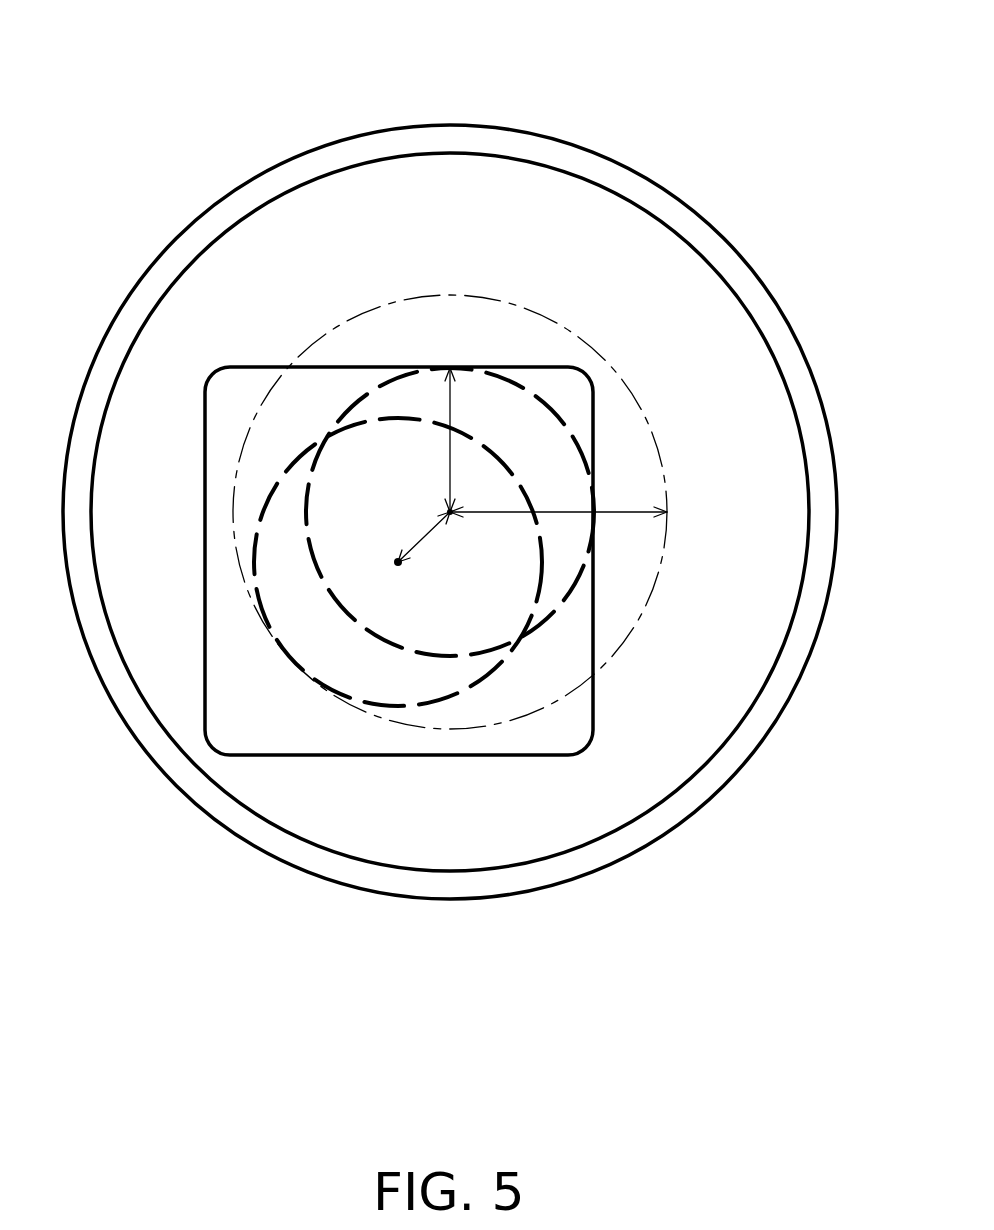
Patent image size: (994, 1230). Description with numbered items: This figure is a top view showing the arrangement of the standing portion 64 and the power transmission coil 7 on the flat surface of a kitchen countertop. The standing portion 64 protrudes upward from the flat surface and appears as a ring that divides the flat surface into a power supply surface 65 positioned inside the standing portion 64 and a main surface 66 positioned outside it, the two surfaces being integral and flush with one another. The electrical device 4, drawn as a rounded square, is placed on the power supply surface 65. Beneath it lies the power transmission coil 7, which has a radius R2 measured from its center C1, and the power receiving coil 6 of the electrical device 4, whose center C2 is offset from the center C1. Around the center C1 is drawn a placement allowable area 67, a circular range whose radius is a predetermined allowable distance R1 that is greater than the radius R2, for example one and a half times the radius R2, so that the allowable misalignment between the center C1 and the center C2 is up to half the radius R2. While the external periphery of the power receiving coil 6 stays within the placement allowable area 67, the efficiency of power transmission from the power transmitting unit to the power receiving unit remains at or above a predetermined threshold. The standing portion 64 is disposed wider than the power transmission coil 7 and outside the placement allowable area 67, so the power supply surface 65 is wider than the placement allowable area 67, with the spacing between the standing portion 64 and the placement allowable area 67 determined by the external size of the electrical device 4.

The standing portion 64 is at (533, 148).
The placement allowable area 67 is at (650, 420).
The power supply surface 65 is at (696, 710).
The main surface 66 is at (203, 911).
The electrical device 4 is at (205, 638).
The power receiving coil 6 is at (283, 500).
The power transmission coil 7 is at (362, 395).
The predetermined allowable distance R1 is at (557, 515).
The radius of the power transmission coil R2 is at (448, 452).
The center of the power transmission coil C1 is at (450, 512).
The center of the power receiving coil C2 is at (398, 562).